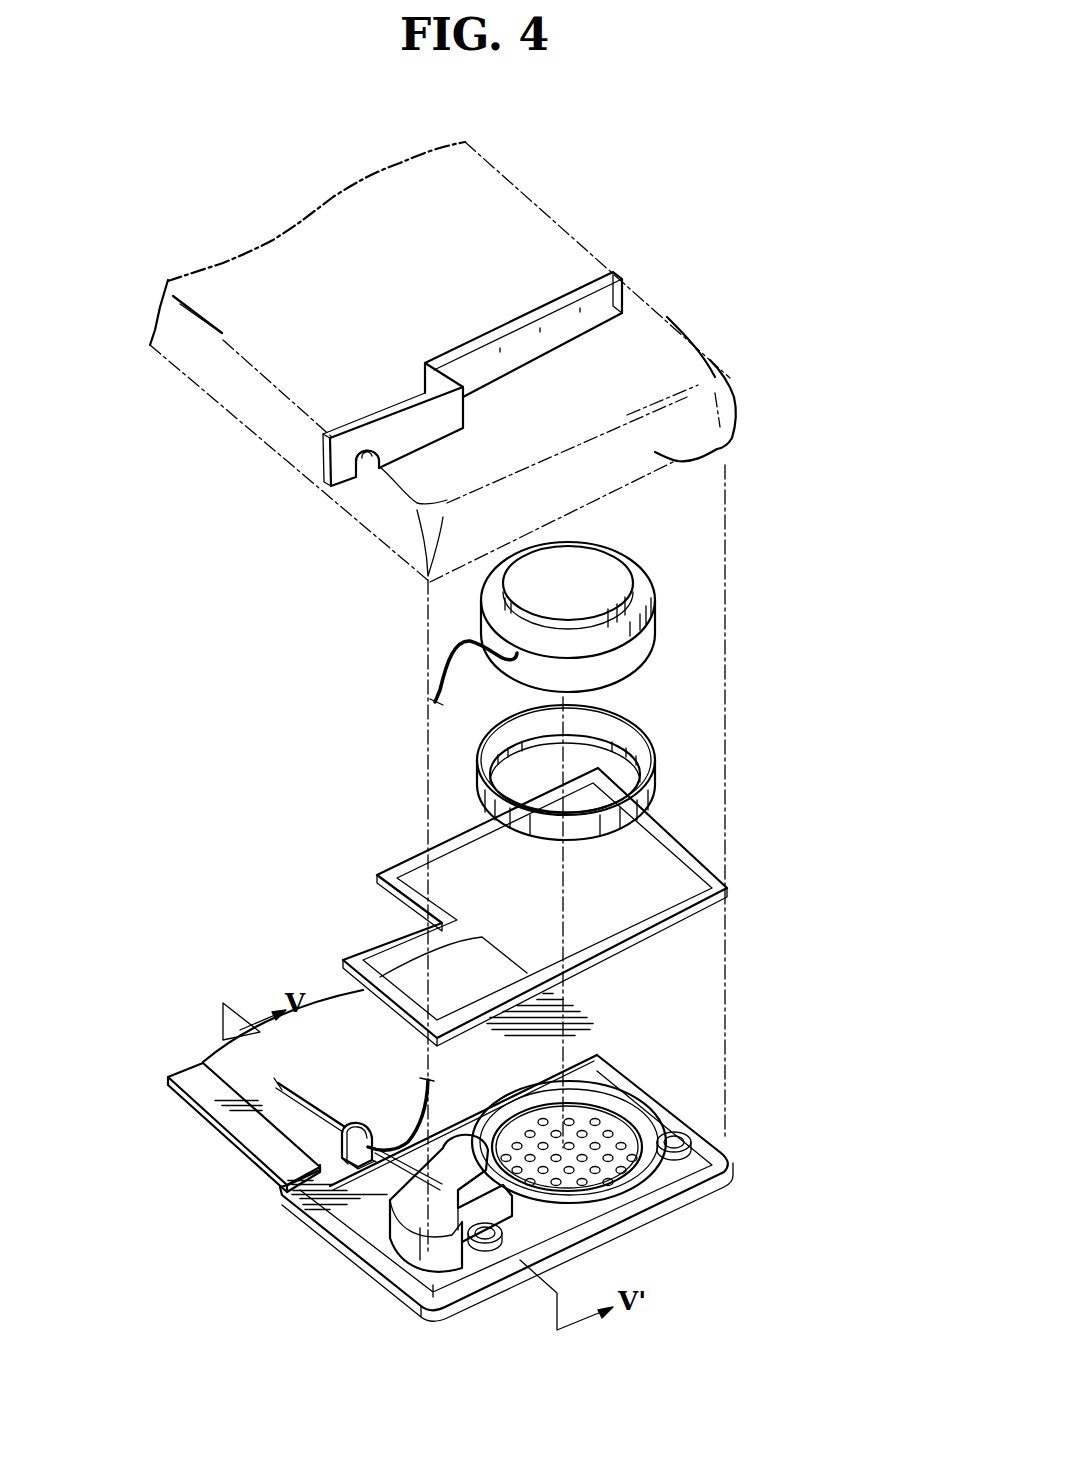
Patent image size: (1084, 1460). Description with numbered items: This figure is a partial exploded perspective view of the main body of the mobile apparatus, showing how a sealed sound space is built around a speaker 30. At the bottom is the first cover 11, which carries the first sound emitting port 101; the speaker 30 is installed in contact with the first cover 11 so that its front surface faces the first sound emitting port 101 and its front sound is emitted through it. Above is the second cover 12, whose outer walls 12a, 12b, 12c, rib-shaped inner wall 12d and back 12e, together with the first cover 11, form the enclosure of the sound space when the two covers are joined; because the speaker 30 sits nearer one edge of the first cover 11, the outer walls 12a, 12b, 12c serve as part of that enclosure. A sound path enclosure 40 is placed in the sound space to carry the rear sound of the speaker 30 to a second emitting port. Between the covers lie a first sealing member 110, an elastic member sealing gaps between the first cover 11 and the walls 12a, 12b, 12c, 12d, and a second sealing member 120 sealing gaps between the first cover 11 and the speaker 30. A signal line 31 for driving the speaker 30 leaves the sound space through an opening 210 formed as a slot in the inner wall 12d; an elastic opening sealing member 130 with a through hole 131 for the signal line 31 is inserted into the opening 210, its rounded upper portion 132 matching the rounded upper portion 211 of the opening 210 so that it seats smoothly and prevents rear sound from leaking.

The first cover 11 is at (685, 1197).
The second cover 12 is at (641, 283).
The outer wall 12a is at (667, 317).
The outer wall 12b is at (680, 461).
The outer wall 12c is at (377, 518).
The inner wall 12d is at (507, 345).
The back 12e is at (640, 332).
The speaker 30 is at (627, 660).
The signal line 31 is at (447, 666).
The sound path enclosure 40 is at (403, 1243).
The first sound emitting port 101 is at (600, 1128).
The first sealing member 110 is at (730, 890).
The second sealing member 120 is at (653, 783).
The opening sealing member 130 is at (348, 1162).
The through hole 131 is at (362, 1165).
The upper portion 132 is at (358, 1125).
The opening 210 is at (380, 468).
The upper portion 211 is at (372, 453).